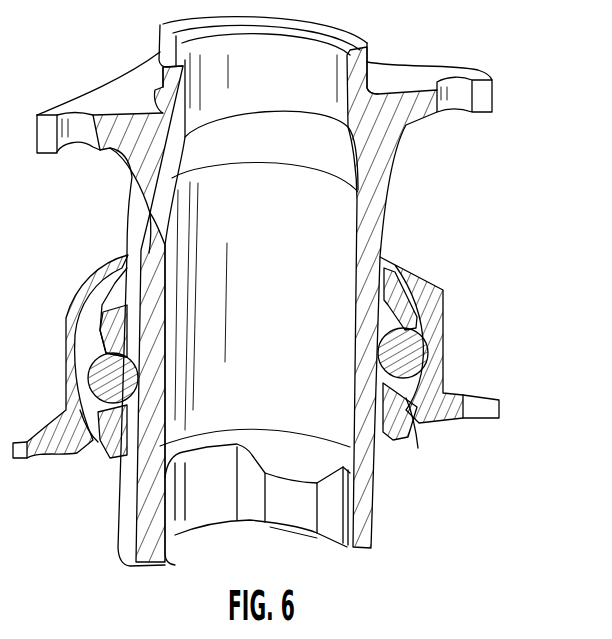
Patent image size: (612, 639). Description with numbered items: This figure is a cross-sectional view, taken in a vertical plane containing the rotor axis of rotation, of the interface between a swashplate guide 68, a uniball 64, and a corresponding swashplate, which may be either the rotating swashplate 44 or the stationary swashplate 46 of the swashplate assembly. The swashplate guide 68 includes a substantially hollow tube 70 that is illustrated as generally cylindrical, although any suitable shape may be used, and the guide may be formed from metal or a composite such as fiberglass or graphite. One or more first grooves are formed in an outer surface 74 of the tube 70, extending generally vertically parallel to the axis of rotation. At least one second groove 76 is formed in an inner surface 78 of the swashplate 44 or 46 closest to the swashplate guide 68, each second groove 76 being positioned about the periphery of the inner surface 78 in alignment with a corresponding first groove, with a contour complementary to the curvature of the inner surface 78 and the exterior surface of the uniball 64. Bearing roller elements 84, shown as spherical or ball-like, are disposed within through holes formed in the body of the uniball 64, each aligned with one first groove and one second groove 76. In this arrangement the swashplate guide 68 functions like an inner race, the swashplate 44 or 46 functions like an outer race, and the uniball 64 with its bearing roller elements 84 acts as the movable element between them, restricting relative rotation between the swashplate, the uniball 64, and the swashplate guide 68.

The swashplate guide 68 is at (88, 499).
The tube 70 is at (148, 250).
The outer surface 74 is at (372, 517).
The rotating swashplate 44 is at (444, 338).
The stationary swashplate 46 is at (288, 355).
The inner surface 78 is at (416, 302).
The uniball 64 is at (113, 337).
The bearing roller element 84 is at (100, 378).
The second groove 76 is at (413, 403).